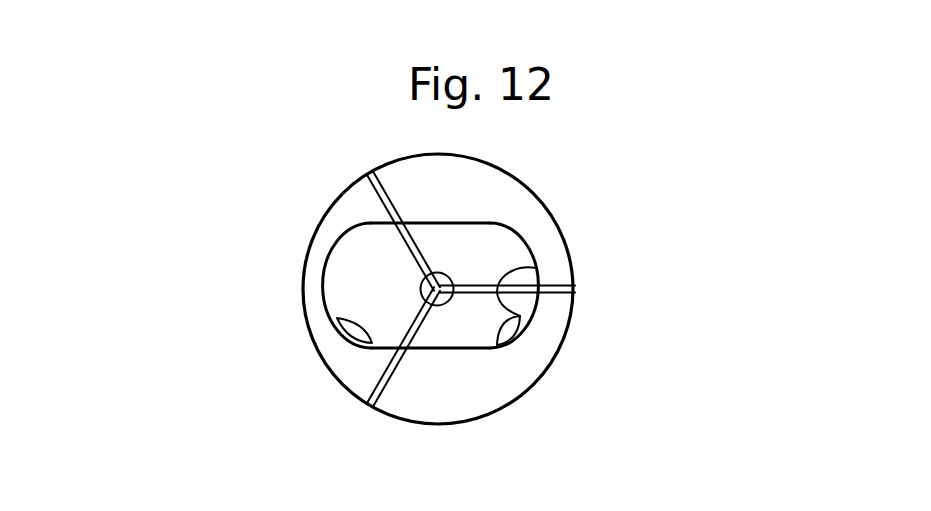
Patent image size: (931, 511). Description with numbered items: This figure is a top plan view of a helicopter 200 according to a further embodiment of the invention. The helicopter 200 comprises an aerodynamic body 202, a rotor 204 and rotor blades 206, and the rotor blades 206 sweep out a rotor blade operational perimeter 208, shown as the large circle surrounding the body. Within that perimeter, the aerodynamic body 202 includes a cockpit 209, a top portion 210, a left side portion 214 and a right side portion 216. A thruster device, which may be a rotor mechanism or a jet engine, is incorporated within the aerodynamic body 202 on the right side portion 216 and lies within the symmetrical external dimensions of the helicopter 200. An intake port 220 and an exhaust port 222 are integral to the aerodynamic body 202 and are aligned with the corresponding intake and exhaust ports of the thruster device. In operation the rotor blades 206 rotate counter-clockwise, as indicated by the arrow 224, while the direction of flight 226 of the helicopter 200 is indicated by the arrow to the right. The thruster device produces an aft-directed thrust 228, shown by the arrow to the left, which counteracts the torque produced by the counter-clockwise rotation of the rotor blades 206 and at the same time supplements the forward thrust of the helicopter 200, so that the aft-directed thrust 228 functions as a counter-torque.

The helicopter 200 is at (168, 300).
The aerodynamic body 202 is at (327, 258).
The rotor 204 is at (447, 280).
The rotor blades 206 is at (378, 200).
The rotor blade operational perimeter 208 is at (547, 203).
The cockpit 209 is at (527, 277).
The top portion 210 is at (356, 293).
The left side portion 214 is at (440, 230).
The right side portion 216 is at (435, 350).
The intake port 220 is at (518, 347).
The exhaust port 222 is at (340, 338).
The arrow 224 is at (290, 105).
The direction of flight 226 is at (904, 293).
The aft-directed thrust 228 is at (258, 342).